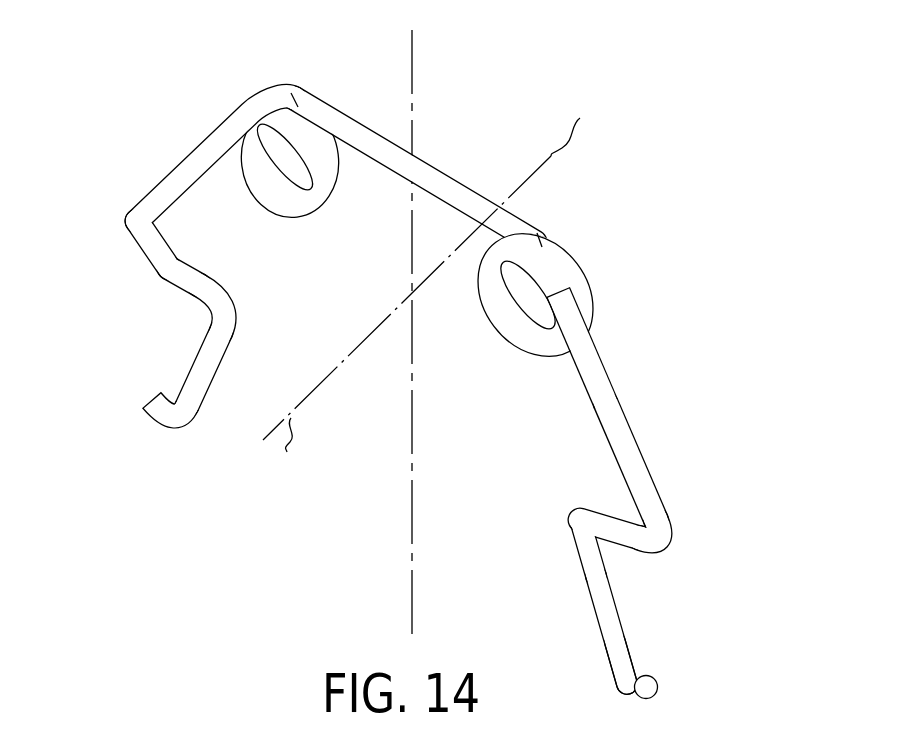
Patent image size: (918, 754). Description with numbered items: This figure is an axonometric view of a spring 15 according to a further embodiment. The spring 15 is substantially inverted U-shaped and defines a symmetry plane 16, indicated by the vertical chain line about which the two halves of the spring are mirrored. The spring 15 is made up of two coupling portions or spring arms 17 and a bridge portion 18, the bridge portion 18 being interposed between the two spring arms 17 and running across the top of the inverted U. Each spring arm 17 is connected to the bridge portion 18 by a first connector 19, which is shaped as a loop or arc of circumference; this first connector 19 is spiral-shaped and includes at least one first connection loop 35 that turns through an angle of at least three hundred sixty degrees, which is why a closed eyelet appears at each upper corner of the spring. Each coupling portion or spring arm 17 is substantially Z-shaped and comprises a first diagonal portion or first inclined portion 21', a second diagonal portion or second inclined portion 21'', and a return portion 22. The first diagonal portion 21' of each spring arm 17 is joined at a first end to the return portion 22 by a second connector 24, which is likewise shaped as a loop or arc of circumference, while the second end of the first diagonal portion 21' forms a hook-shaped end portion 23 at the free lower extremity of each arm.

The spring 15 is at (403, 362).
The symmetry plane 16 is at (413, 70).
The coupling portion or spring arm 17 is at (147, 193).
The bridge portion 18 is at (467, 205).
The first connector 19 is at (273, 86).
The first diagonal portion or first inclined portion 21' is at (466, 508).
The second diagonal portion or second inclined portion 21'' is at (430, 243).
The return portion 22 is at (163, 258).
The hook-shaped end portion 23 is at (157, 412).
The second connector 24 is at (220, 313).
The first connection loop 35 is at (310, 206).